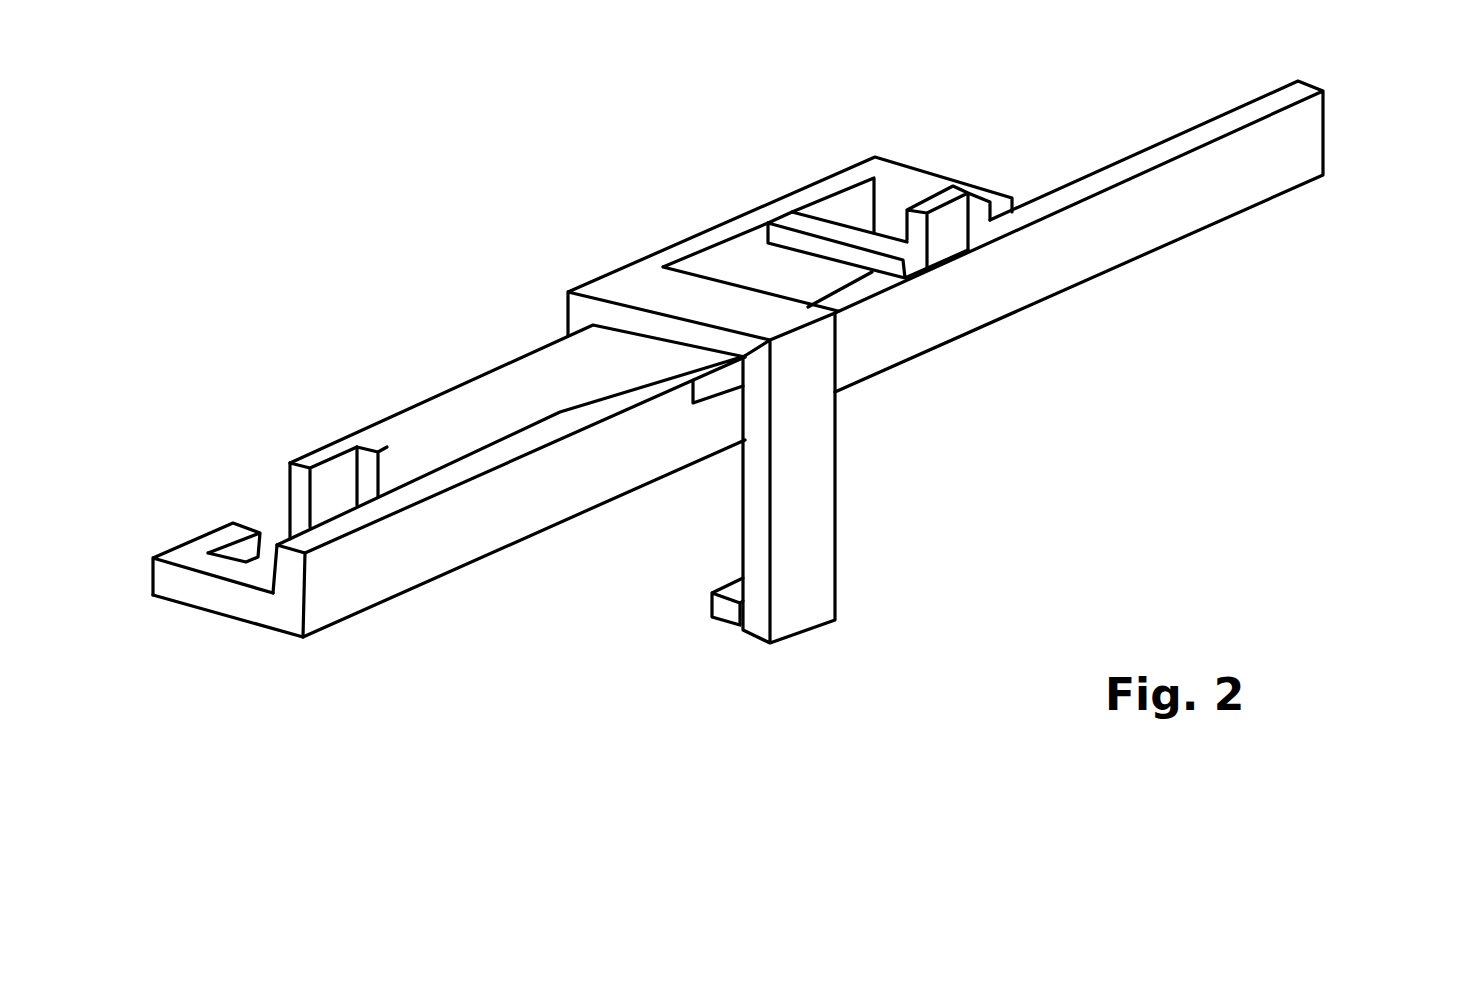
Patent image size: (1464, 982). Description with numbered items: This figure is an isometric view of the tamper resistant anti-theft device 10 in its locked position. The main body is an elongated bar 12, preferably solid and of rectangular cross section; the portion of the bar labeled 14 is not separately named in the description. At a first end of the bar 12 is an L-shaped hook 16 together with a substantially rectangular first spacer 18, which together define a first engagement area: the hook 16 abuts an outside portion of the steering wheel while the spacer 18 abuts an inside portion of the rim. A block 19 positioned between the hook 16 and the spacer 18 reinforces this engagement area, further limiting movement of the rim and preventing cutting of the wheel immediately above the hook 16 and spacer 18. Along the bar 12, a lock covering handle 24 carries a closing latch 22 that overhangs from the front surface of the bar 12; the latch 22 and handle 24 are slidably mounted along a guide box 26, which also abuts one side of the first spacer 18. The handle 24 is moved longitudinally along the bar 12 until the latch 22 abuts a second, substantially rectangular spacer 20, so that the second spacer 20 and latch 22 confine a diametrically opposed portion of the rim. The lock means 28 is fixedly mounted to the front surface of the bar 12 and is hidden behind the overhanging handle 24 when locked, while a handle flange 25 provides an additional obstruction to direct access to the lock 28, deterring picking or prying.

The anti-theft device 10 is at (784, 408).
The elongated bar 12 is at (1140, 262).
The bar section 14 is at (302, 640).
The L-shaped hook 16 is at (197, 536).
The first spacer 18 is at (363, 437).
The block 19 is at (290, 462).
The second spacer 20 is at (911, 169).
The closing latch 22 is at (722, 224).
The lock covering handle 24 is at (842, 508).
The handle flange 25 is at (726, 618).
The guide box 26 is at (486, 373).
The lock means 28 is at (695, 400).